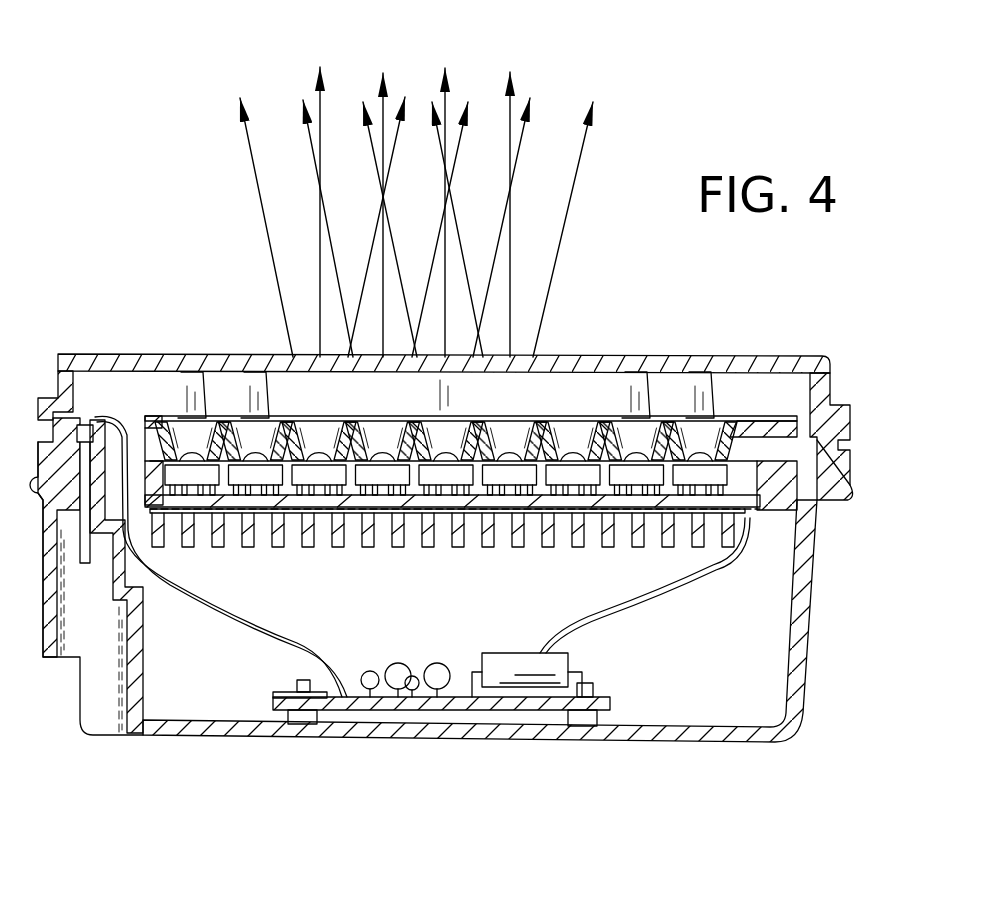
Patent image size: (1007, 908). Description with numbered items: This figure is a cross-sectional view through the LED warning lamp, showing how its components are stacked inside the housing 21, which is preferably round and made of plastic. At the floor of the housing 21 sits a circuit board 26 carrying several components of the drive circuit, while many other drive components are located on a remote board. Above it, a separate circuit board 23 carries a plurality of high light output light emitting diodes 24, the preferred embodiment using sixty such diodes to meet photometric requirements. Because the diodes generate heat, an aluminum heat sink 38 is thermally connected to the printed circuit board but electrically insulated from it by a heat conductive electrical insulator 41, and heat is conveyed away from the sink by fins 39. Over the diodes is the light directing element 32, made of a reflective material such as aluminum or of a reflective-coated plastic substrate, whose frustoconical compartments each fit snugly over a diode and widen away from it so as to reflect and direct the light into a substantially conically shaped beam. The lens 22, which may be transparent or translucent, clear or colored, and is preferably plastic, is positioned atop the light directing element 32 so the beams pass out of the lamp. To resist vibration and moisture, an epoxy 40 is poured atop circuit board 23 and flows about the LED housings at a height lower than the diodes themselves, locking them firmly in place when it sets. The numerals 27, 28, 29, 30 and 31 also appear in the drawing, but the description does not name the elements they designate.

The housing 21 is at (814, 678).
The lens 22 is at (832, 355).
The circuit board 23 is at (413, 545).
The light emitting diodes 24 is at (372, 548).
The circuit board 26 is at (605, 688).
The lens element 27 is at (185, 370).
The lens element 28 is at (253, 357).
The reflector cup 29 is at (435, 395).
The lens element 30 is at (632, 372).
The lens element 31 is at (700, 383).
The light directing element 32 is at (755, 420).
The heat sink 38 is at (470, 550).
The fins 39 is at (588, 550).
The epoxy 40 is at (822, 503).
The heat conductive electrical insulator 41 is at (753, 545).